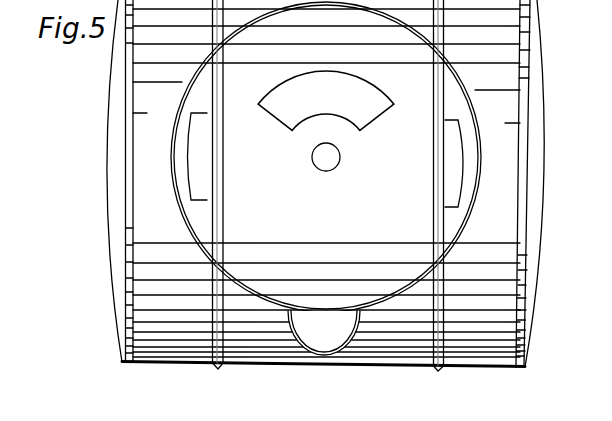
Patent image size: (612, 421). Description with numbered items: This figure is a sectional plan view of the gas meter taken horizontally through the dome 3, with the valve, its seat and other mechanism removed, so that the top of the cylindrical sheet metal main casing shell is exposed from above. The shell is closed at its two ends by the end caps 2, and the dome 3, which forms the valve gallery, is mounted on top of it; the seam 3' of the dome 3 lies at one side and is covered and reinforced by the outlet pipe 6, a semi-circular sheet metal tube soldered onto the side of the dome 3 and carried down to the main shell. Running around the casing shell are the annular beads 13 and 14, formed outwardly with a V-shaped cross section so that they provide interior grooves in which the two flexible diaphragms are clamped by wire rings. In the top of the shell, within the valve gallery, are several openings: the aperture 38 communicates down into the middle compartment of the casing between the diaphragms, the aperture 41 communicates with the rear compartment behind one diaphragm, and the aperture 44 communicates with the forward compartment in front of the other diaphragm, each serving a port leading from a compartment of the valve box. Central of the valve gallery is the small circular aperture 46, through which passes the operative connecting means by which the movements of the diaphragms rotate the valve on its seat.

The end cap 2 is at (118, 165).
The dome 3 is at (332, 157).
The seam 3' is at (324, 353).
The outlet pipe 6 is at (300, 345).
The annular bead 13 is at (218, 368).
The annular bead 14 is at (438, 371).
The aperture 38 is at (326, 100).
The aperture 41 is at (452, 167).
The aperture 44 is at (193, 160).
The circular aperture 46 is at (318, 169).